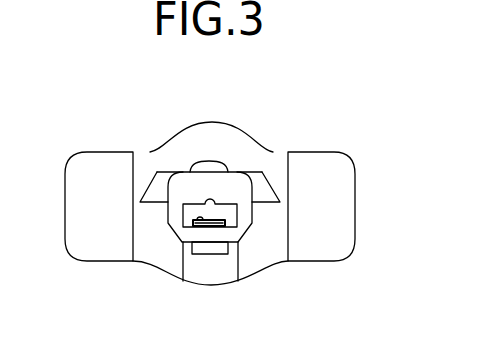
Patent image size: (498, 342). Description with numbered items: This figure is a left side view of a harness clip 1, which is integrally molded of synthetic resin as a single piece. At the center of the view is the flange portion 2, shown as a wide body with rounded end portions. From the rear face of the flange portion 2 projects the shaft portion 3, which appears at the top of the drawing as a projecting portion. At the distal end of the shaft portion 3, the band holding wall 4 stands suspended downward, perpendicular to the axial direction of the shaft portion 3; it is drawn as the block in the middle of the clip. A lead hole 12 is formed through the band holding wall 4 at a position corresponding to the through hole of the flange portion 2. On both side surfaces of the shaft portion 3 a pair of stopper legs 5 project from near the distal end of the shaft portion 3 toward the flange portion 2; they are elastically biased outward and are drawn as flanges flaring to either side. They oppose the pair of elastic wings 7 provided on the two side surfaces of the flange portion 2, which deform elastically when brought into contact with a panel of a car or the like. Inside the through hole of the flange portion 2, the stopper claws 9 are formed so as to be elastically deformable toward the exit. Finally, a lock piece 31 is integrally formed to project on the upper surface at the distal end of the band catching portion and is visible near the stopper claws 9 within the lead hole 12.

The harness clip 1 is at (333, 115).
The flange portion 2 is at (236, 137).
The shaft portion 3 is at (209, 160).
The band holding wall 4 is at (246, 216).
The stopper legs 5 is at (170, 177).
The elastic wings 7 is at (97, 160).
The stopper claws 9 is at (202, 224).
The lead hole 12 is at (182, 242).
The lock piece 31 is at (222, 222).